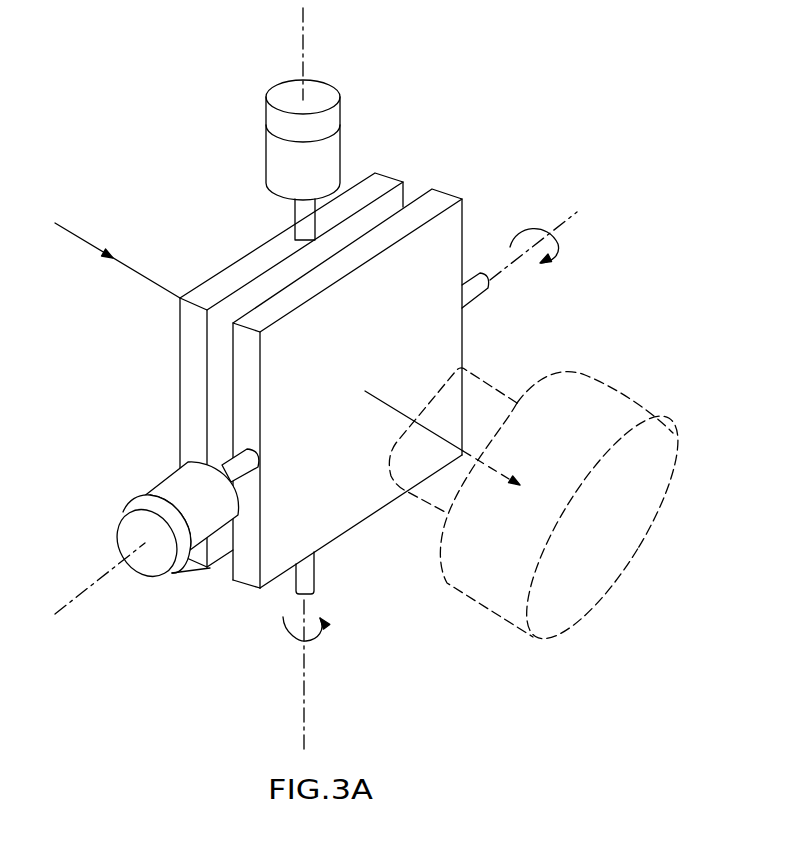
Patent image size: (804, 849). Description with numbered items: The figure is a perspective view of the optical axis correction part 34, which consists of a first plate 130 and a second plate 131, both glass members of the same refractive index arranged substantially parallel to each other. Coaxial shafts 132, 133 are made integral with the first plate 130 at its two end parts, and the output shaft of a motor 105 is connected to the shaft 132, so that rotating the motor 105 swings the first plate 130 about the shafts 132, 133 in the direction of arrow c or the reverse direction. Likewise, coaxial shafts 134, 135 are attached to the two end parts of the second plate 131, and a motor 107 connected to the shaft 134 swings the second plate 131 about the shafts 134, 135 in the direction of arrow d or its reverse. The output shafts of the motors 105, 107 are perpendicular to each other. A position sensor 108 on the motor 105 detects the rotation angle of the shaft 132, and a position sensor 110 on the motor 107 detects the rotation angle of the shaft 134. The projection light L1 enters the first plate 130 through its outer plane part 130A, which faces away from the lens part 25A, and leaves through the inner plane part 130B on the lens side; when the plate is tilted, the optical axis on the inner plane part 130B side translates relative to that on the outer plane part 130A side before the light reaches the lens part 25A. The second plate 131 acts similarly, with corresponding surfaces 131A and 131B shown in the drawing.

The optical axis correction part 34 is at (465, 132).
The second plate 131 is at (393, 175).
The incident surface of first plate 131A is at (180, 337).
The exit surface of first plate 131B is at (214, 318).
The first plate 130 is at (448, 192).
The outer plane part 130A is at (232, 342).
The inner plane part 130B is at (275, 358).
The shaft 133 is at (473, 278).
The shaft 135 is at (314, 560).
The shaft 134 is at (293, 217).
The shaft 132 is at (243, 477).
The motor 107 is at (342, 153).
The motor 105 is at (153, 483).
The position sensor 110 is at (318, 97).
The position sensor 108 is at (147, 557).
The lens part 25A is at (607, 387).
The projection light L1 is at (70, 224).
The arrow c is at (559, 250).
The arrow d is at (333, 630).